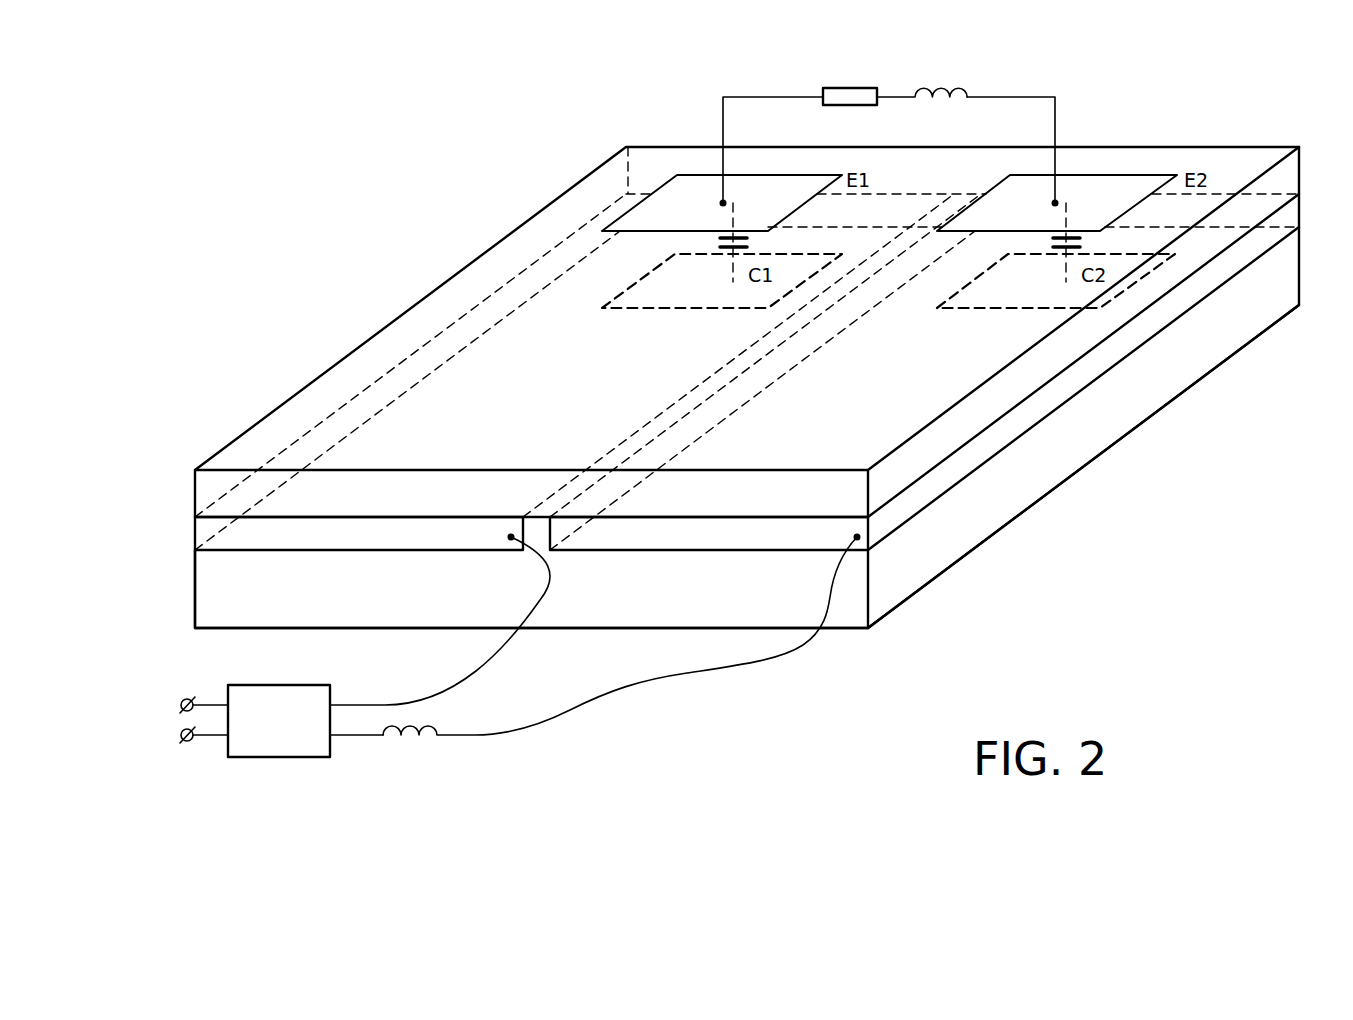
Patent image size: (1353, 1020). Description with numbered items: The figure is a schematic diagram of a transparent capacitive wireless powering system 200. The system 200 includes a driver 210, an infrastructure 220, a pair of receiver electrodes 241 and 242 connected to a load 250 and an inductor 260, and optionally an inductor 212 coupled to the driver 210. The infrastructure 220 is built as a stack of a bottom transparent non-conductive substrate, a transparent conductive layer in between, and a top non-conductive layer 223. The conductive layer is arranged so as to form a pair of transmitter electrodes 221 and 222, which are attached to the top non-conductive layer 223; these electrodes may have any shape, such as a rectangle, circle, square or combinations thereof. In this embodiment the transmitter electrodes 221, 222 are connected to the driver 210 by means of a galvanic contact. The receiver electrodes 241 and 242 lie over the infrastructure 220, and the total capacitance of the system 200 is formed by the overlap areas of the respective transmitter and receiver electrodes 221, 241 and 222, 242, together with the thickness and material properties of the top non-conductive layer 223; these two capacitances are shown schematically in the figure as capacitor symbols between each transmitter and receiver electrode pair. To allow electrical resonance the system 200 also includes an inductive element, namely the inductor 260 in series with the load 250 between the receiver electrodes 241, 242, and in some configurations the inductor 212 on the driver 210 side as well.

The transparent capacitive wireless powering system 200 is at (225, 117).
The driver 210 is at (297, 746).
The inductor 212 is at (436, 730).
The infrastructure 220 is at (1125, 437).
The transmitter electrode 221 is at (898, 513).
The transmitter electrode 222 is at (195, 536).
The top non-conductive layer 223 is at (902, 388).
The receiver electrode 241 is at (1055, 125).
The receiver electrode 242 is at (723, 125).
The load 250 is at (850, 88).
The inductor 260 is at (948, 88).